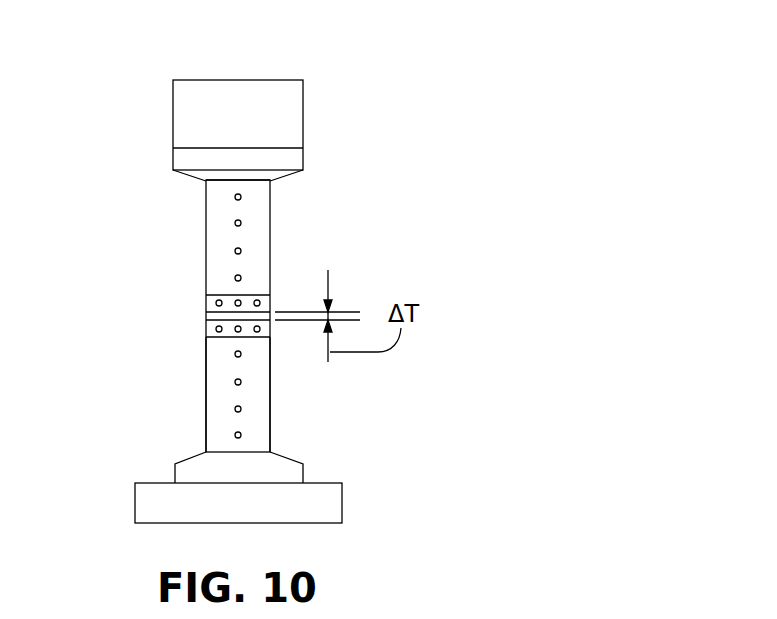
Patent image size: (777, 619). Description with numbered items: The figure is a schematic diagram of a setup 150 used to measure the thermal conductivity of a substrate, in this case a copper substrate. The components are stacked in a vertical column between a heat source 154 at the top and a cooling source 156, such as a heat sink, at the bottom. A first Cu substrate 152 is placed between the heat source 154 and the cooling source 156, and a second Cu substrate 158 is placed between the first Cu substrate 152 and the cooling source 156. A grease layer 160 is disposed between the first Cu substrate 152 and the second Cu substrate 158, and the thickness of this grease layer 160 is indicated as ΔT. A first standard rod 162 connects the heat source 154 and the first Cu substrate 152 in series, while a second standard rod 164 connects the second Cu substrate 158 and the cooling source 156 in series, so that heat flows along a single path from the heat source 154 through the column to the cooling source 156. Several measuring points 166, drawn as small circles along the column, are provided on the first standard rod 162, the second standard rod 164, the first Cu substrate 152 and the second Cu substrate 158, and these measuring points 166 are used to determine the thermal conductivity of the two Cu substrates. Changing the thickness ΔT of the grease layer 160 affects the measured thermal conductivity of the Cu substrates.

The setup 150 is at (357, 60).
The first Cu substrate 152 is at (271, 295).
The heat source 154 is at (173, 115).
The cooling source 156 is at (134, 505).
The second Cu substrate 158 is at (260, 330).
The grease layer 160 is at (206, 316).
The first standard rod 162 is at (271, 200).
The second standard rod 164 is at (271, 402).
The measuring points 166 is at (235, 199).